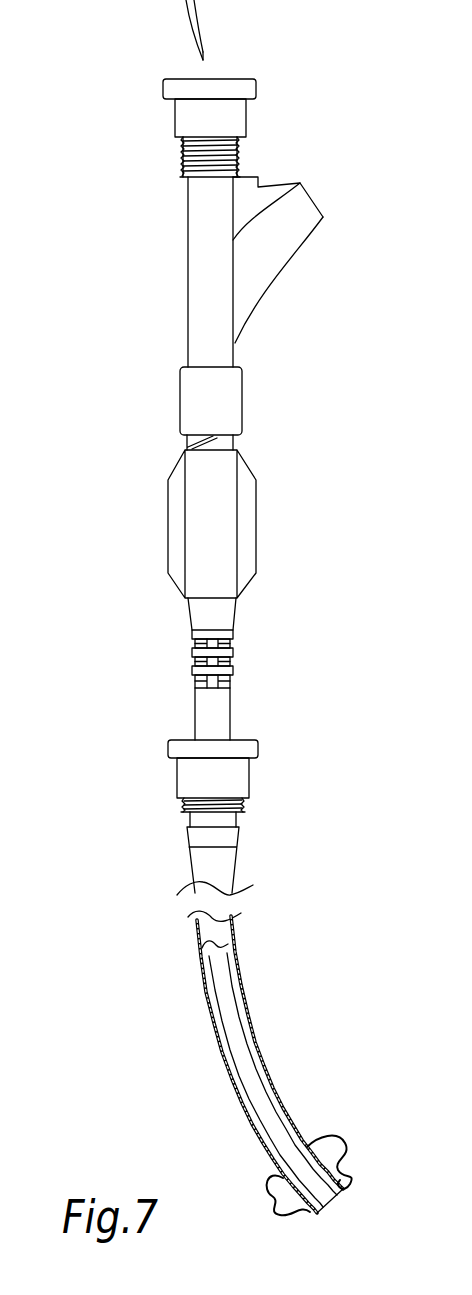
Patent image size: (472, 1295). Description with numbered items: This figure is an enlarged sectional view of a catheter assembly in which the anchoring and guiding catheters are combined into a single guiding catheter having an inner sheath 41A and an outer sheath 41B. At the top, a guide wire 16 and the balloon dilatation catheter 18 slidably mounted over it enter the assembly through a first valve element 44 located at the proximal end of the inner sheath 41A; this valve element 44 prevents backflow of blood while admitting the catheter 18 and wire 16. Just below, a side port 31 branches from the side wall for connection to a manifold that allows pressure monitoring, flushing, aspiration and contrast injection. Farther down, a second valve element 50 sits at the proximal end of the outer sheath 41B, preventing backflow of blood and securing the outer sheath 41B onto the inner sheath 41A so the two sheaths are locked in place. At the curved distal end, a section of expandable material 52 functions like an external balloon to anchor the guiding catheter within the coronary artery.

The guide wire 16 is at (207, 47).
The balloon dilatation catheter 18 is at (192, 17).
The first valve element 44 is at (246, 118).
The side port 31 is at (283, 247).
The second valve element 50 is at (249, 778).
The outer sheath 41B is at (238, 870).
The inner sheath 41A is at (283, 1104).
The section of expandable material 52 is at (338, 1141).